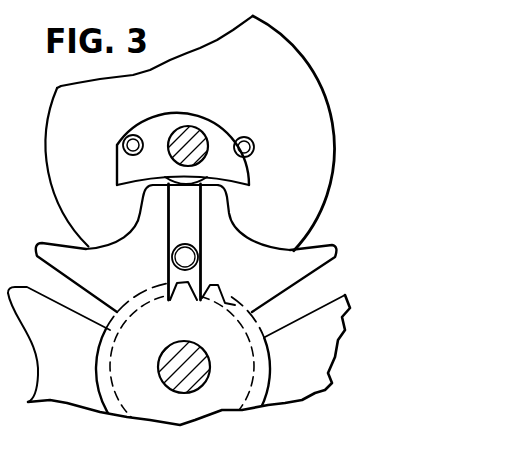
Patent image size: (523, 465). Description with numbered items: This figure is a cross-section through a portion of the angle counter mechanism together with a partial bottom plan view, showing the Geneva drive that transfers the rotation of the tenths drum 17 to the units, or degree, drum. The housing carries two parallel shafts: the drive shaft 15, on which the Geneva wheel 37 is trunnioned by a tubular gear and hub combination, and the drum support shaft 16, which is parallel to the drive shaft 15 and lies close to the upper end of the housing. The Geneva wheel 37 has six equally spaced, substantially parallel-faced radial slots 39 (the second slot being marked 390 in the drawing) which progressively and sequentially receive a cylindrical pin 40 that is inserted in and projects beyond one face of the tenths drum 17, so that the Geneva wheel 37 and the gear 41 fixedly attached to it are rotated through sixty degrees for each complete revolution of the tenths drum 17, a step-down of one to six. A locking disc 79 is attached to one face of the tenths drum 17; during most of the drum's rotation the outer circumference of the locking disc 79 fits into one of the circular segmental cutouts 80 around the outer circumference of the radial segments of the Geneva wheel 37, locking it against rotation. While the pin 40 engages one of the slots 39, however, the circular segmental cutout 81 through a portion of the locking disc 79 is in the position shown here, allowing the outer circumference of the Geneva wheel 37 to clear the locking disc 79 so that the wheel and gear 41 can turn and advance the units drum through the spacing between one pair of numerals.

The drive shaft 15 is at (168, 343).
The drum support shaft 16 is at (190, 131).
The tenths drum 17 is at (264, 38).
The Geneva wheel 37 is at (292, 265).
The radial slots 39 is at (182, 213).
The arm 390 is at (290, 305).
The cylindrical pin 40 is at (194, 257).
The gear 41 is at (224, 384).
The locking disc 79 is at (127, 118).
The circular segmental cutouts 80 is at (100, 242).
The cutout 81 is at (225, 175).